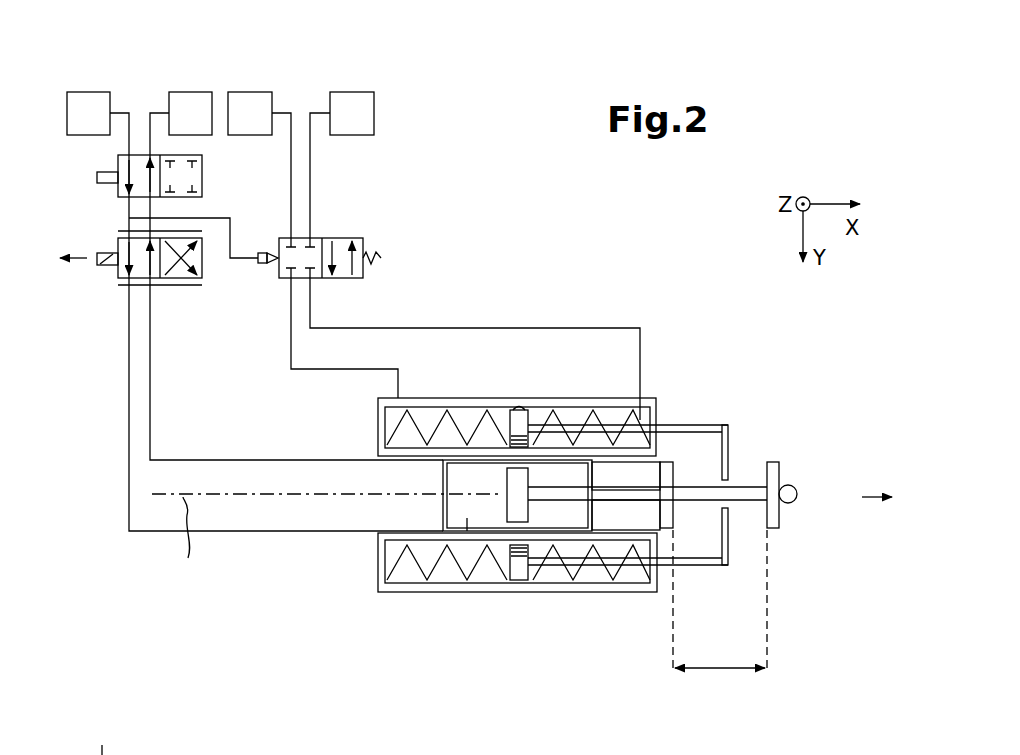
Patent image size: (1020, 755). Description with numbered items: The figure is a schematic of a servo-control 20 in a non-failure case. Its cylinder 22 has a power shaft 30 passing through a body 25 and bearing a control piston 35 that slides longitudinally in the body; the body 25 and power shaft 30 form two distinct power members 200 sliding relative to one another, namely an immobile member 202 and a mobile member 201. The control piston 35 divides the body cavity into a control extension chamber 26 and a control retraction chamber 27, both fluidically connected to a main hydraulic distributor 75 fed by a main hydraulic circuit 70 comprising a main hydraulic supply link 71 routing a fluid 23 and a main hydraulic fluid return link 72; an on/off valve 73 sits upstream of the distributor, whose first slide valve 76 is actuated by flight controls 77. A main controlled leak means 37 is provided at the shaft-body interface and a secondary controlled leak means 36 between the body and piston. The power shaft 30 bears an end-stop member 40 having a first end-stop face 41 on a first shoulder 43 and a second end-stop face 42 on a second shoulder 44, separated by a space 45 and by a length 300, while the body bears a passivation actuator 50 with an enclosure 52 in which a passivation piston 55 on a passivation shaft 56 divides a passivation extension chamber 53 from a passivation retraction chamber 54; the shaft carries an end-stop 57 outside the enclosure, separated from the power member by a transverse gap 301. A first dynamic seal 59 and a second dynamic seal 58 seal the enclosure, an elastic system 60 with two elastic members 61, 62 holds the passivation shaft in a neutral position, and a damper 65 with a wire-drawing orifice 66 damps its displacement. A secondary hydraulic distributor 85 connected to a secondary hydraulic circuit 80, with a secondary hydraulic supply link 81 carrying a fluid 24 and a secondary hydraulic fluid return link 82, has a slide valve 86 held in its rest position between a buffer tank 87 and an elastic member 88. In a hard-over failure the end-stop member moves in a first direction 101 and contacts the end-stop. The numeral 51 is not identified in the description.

The servo-control 20 is at (515, 683).
The cylinder 22 is at (603, 653).
The fluid 23 is at (105, 122).
The fluid 24 is at (266, 122).
The body 25 is at (679, 399).
The control extension chamber 26 is at (482, 510).
The control retraction chamber 27 is at (593, 487).
The power shaft 30 is at (771, 489).
The control piston 35 is at (507, 510).
The secondary controlled leak means 36 is at (507, 468).
The main controlled leak means 37 is at (600, 502).
The end-stop member 40 is at (780, 545).
The first end-stop face 41 is at (763, 512).
The second end-stop face 42 is at (677, 472).
The first shoulder 43 is at (775, 468).
The second shoulder 44 is at (664, 530).
The space 45 is at (734, 508).
The passivation actuator 50 is at (580, 602).
The cylinder housing 51 is at (387, 593).
The enclosure 52 is at (412, 570).
The passivation extension chamber 53 is at (447, 572).
The passivation retraction chamber 54 is at (560, 577).
The passivation piston 55 is at (525, 410).
The passivation shaft 56 is at (523, 580).
The end-stop 57 is at (728, 437).
The second dynamic seal 58 is at (517, 410).
The first dynamic seal 59 is at (662, 570).
The elastic system 60 is at (432, 422).
The elastic member 61 is at (460, 427).
The elastic member 62 is at (593, 417).
The damper 65 is at (500, 348).
The wire-drawing orifice 66 is at (512, 410).
The main hydraulic circuit 70 is at (133, 65).
The main hydraulic supply link 71 is at (67, 108).
The main hydraulic fluid return link 72 is at (203, 92).
The on/off valve 73 is at (95, 155).
The main hydraulic distributor 75 is at (87, 280).
The first slide valve 76 is at (205, 270).
The flight controls 77 is at (53, 260).
The secondary hydraulic circuit 80 is at (365, 77).
The secondary hydraulic supply link 81 is at (240, 135).
The secondary hydraulic fluid return link 82 is at (395, 110).
The secondary hydraulic distributor 85 is at (350, 223).
The slide valve 86 is at (362, 238).
The buffer tank 87 is at (264, 253).
The elastic member 88 is at (373, 258).
The first direction 101 is at (887, 500).
The power member 200 is at (751, 468).
The mobile member 201 is at (757, 433).
The immobile member 202 is at (600, 473).
The length 300 is at (707, 670).
The transverse gap 301 is at (748, 467).